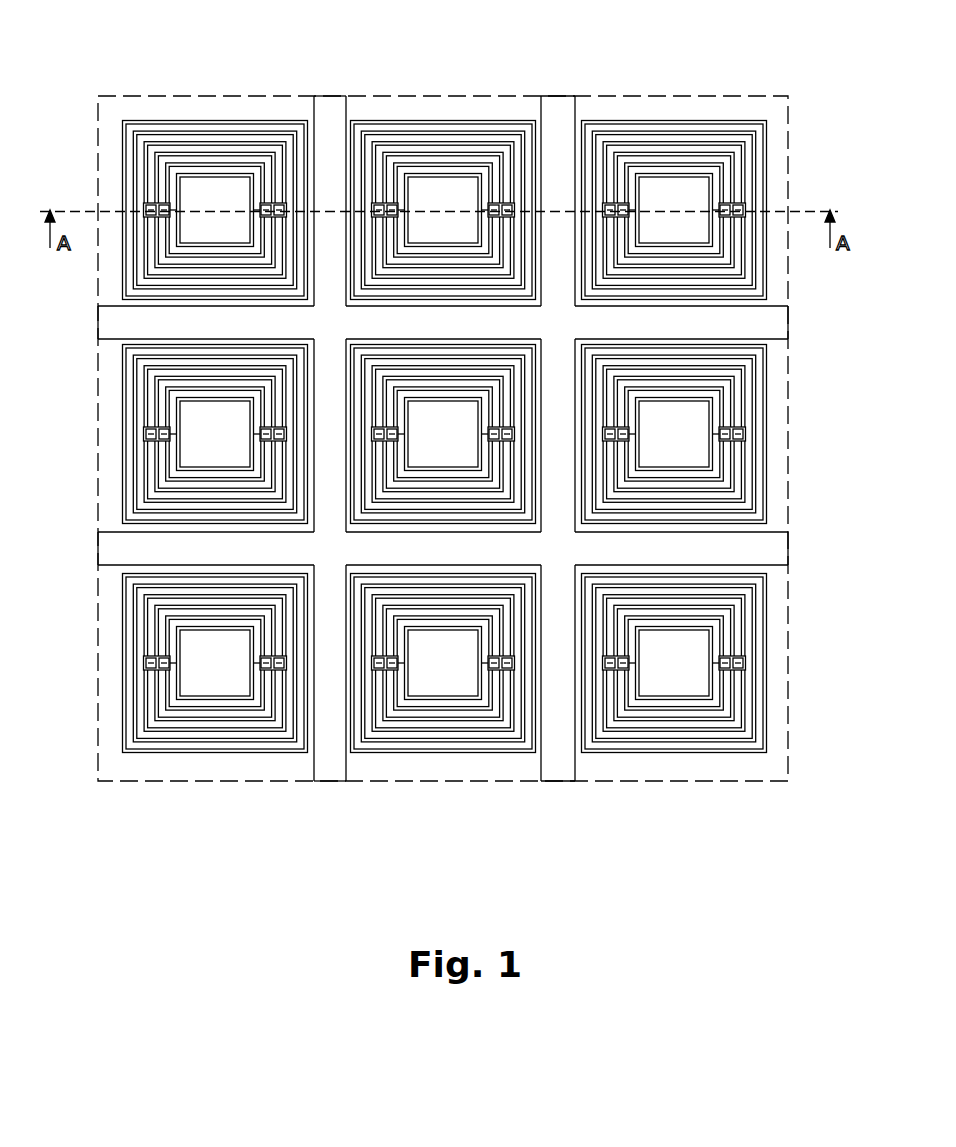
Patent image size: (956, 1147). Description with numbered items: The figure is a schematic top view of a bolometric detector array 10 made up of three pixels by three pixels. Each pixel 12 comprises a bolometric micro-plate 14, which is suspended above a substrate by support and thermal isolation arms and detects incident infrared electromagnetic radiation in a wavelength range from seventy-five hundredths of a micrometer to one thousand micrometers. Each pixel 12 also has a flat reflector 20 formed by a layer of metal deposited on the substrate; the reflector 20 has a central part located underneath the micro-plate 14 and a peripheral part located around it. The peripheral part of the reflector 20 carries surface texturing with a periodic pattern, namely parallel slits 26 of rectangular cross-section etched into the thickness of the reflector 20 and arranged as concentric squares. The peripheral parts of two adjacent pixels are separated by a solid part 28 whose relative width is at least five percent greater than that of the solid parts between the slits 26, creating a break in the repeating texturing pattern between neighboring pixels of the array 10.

The bolometric detector array 10 is at (72, 101).
The pixel 12 is at (195, 84).
The bolometric micro-plate 14 is at (205, 182).
The flat reflector 20 is at (430, 160).
The parallel slits 26 is at (765, 656).
The solid part 28 is at (561, 118).